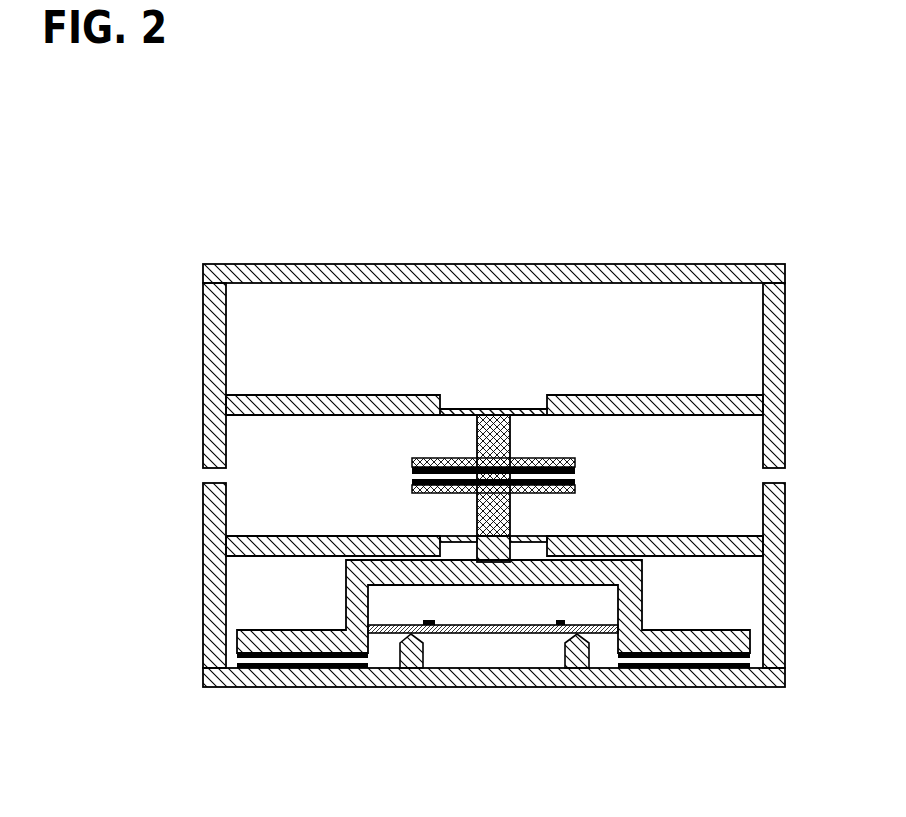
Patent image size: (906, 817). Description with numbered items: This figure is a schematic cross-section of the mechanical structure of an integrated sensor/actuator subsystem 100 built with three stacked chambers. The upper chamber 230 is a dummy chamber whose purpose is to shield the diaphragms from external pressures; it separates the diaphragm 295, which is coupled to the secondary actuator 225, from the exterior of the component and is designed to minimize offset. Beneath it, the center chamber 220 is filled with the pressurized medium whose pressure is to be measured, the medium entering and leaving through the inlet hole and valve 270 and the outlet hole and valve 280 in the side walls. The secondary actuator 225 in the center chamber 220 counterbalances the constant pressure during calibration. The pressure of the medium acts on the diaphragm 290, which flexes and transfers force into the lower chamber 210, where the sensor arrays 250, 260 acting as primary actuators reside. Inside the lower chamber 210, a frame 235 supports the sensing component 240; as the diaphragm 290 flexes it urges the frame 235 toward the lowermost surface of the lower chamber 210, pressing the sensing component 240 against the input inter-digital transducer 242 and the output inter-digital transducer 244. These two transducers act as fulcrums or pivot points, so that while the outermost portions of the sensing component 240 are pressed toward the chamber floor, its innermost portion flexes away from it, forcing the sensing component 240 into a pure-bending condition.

The integrated sensor/actuator subsystem 100 is at (262, 252).
The upper chamber 230 is at (240, 332).
The inlet hole and valve 270 is at (197, 477).
The outlet hole and valve 280 is at (787, 476).
The center chamber 220 is at (333, 493).
The diaphragm 295 is at (508, 397).
The secondary actuator 225 is at (405, 478).
The lower chamber 210 is at (230, 575).
The diaphragm 290 is at (532, 548).
The frame 235 is at (325, 642).
The sensor array 250 is at (238, 654).
The sensor array 260 is at (750, 654).
The sensing component 240 is at (513, 633).
The input inter-digital transducer 242 is at (417, 657).
The output inter-digital transducer 244 is at (577, 655).